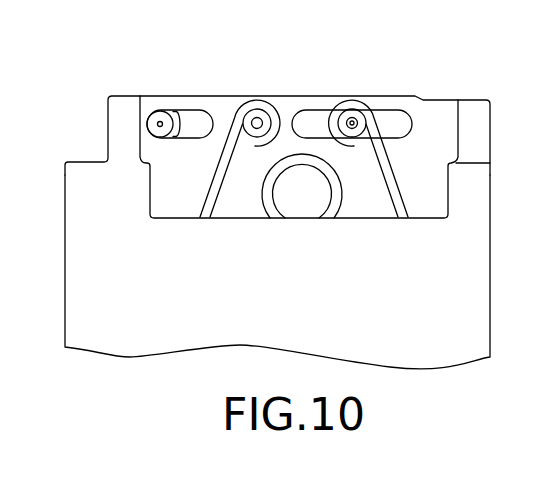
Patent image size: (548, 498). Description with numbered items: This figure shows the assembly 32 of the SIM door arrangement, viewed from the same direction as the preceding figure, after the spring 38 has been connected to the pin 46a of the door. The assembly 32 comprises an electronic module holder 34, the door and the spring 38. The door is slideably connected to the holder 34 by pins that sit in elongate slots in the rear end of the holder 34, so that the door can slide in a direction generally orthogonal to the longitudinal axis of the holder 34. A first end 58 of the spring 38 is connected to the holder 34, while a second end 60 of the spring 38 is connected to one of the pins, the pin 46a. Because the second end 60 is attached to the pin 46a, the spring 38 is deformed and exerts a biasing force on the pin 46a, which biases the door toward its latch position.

The assembly 32 is at (186, 81).
The electronic module holder 34 is at (490, 310).
The spring 38 is at (214, 168).
The first end of the spring 58 is at (249, 101).
The second end of the spring 60 is at (340, 102).
The pin 46a is at (354, 121).